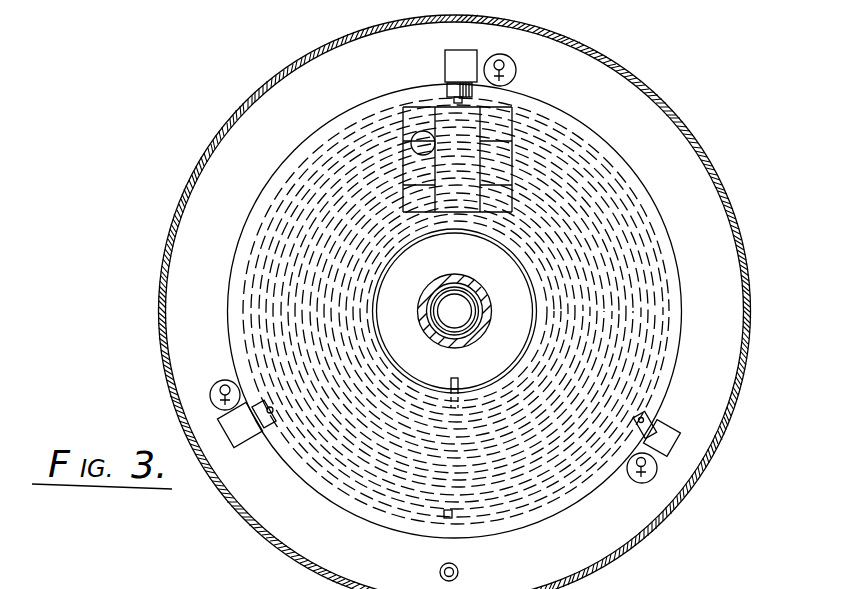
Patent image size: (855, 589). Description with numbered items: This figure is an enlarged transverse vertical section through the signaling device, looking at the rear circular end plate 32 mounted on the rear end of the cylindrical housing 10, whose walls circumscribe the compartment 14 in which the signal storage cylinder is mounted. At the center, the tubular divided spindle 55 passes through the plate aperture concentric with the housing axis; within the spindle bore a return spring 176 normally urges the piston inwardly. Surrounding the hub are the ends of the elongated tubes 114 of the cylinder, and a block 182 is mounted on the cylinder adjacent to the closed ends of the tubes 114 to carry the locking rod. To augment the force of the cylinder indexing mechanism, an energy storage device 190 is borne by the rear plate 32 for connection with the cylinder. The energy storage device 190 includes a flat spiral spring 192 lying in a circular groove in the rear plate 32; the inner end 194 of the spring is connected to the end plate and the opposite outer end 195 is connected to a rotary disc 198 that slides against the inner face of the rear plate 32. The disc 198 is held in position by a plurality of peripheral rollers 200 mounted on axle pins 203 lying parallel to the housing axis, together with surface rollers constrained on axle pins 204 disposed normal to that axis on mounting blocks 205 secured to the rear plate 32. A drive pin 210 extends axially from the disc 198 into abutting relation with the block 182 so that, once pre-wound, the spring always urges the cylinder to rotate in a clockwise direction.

The cylindrical housing 10 is at (660, 84).
The compartment 14 is at (666, 163).
The rear circular end plate 32 is at (728, 287).
The tubular divided spindle 55 is at (456, 275).
The elongated tubes 114 is at (264, 588).
The return spring 176 is at (466, 328).
The block 182 is at (515, 124).
The energy storage device 190 is at (683, 302).
The flat spiral spring 192 is at (541, 500).
The inner end of spiral spring 194 is at (451, 380).
The outer end of spiral spring 195 is at (446, 521).
The rotary disc 198 is at (356, 515).
The peripheral rollers 200 is at (516, 70).
The axle pins for peripheral rollers 203 is at (507, 64).
The axle pins for surface rollers 204 is at (447, 77).
The mounting blocks 205 is at (447, 90).
The drive pin 210 is at (414, 136).